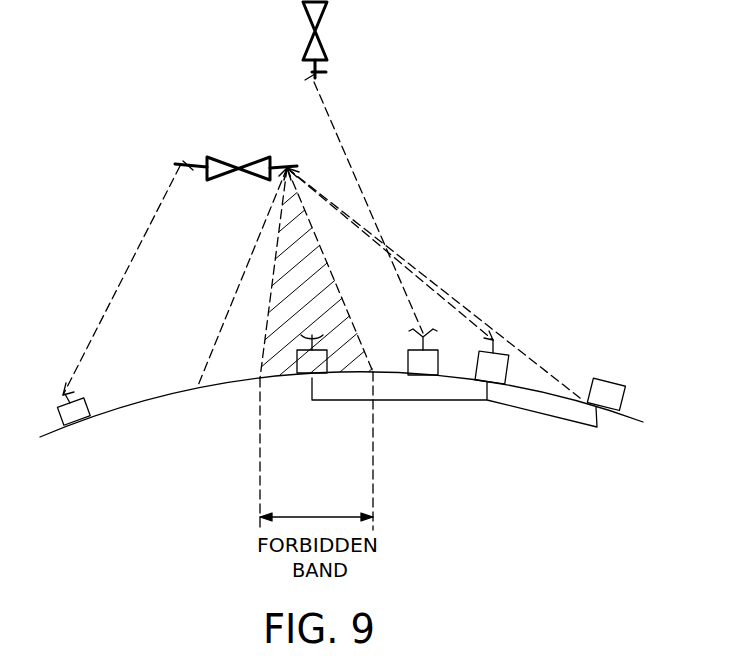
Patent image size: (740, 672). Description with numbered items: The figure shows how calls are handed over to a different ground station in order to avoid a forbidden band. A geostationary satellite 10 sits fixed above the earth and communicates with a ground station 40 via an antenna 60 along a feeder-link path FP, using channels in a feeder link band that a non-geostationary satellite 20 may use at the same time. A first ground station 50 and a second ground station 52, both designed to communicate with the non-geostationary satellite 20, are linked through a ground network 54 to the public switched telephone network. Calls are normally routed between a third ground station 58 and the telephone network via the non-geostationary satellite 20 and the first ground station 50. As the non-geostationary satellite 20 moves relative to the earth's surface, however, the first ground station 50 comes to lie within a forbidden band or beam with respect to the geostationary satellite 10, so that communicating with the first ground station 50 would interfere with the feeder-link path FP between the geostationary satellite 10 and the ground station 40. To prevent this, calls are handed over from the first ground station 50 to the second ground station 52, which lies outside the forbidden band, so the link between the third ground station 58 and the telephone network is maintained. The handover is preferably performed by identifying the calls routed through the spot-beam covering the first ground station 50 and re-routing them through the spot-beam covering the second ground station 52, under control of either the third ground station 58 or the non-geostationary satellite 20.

The geostationary satellite 10 is at (321, 44).
The non-geostationary satellite 20 is at (225, 162).
The antenna 60 is at (287, 167).
The ground station 40 is at (413, 360).
The first ground station 50 is at (308, 373).
The second ground station 52 is at (505, 362).
The ground network 54 is at (518, 408).
The third ground station 58 is at (75, 421).
The feeder-link path FP is at (353, 160).